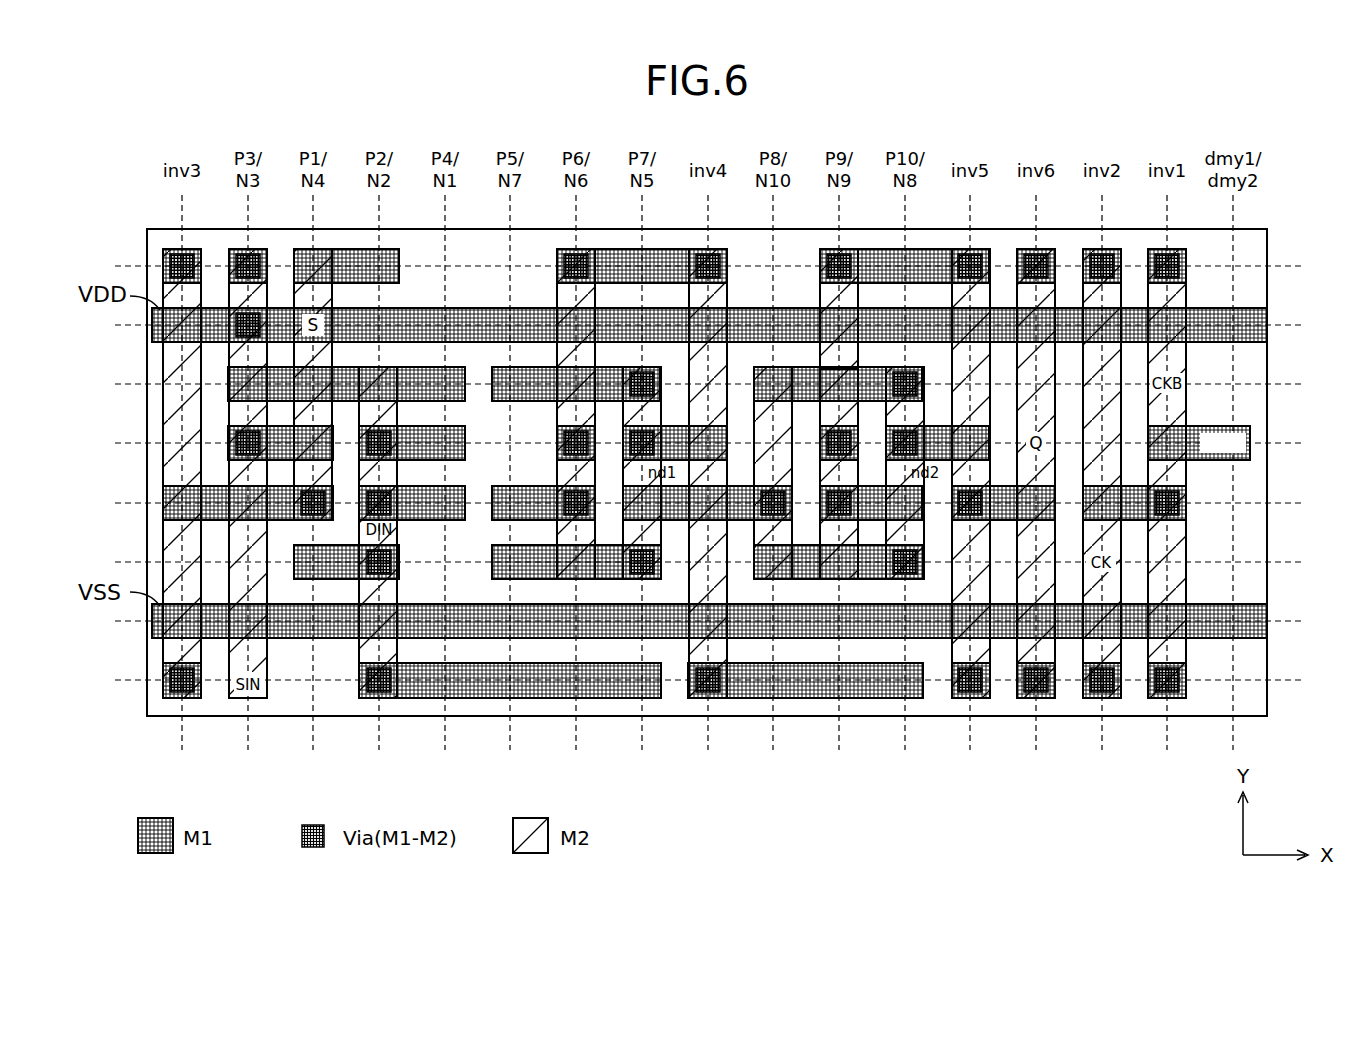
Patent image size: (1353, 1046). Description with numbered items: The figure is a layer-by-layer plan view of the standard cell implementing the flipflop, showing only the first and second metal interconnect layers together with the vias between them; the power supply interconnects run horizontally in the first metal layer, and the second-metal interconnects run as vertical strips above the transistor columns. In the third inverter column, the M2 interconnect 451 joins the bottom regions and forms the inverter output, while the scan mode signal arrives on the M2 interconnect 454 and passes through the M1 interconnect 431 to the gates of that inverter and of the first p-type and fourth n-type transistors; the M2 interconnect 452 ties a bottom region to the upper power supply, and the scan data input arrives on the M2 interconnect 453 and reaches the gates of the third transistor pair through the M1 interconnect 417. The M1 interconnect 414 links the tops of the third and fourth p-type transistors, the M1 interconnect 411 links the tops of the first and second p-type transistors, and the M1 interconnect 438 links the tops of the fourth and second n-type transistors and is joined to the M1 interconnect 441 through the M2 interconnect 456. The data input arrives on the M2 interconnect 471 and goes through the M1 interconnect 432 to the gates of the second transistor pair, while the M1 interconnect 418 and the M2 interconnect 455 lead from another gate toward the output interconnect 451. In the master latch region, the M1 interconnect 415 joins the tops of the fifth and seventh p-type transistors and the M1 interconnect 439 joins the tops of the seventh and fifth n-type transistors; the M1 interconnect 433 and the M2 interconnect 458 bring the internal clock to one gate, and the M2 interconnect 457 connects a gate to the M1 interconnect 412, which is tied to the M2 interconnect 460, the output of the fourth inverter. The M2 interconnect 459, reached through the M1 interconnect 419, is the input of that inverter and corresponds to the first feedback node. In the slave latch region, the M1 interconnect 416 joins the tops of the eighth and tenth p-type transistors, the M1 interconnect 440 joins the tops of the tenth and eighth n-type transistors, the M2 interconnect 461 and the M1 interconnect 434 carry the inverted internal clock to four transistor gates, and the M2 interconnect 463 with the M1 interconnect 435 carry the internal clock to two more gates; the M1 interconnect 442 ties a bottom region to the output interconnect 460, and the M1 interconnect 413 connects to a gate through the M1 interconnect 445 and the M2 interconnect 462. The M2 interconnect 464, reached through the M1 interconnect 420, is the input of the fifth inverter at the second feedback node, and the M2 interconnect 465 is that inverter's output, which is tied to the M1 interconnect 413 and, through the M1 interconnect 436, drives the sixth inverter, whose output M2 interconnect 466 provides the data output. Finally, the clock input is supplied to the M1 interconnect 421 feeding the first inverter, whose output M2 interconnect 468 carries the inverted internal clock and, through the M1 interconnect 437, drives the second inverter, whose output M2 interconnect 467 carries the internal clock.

The M1 interconnect 411 is at (358, 248).
The M1 interconnect 412 is at (665, 248).
The M1 interconnect 413 is at (925, 248).
The M1 interconnect 414 is at (270, 367).
The M1 interconnect 415 is at (520, 367).
The M1 interconnect 416 is at (814, 369).
The M1 interconnect 417 is at (270, 426).
The M1 interconnect 418 is at (440, 426).
The M1 interconnect 419 is at (650, 426).
The M1 interconnect 420 is at (918, 426).
The M1 interconnect 421 is at (1195, 428).
The M1 interconnect 431 is at (215, 520).
The M1 interconnect 432 is at (430, 520).
The M1 interconnect 433 is at (546, 486).
The M1 interconnect 434 is at (735, 520).
The M1 interconnect 435 is at (865, 530).
The M1 interconnect 436 is at (1003, 525).
The M1 interconnect 437 is at (1133, 525).
The M1 interconnect 438 is at (326, 547).
The M1 interconnect 439 is at (623, 518).
The M1 interconnect 440 is at (780, 533).
The M1 interconnect 441 is at (470, 700).
The M1 interconnect 442 is at (800, 700).
The M1 interconnect 445 is at (858, 450).
The M2 interconnect 451 is at (163, 408).
The M2 interconnect 452 is at (231, 255).
The M2 interconnect 453 is at (230, 660).
The M2 interconnect 454 is at (294, 258).
The M2 interconnect 455 is at (356, 428).
The M2 interconnect 456 is at (360, 660).
The M2 interconnect 457 is at (557, 297).
The M2 interconnect 458 is at (556, 562).
The M2 interconnect 459 is at (663, 560).
The M2 interconnect 460 is at (727, 297).
The M2 interconnect 461 is at (754, 420).
The M2 interconnect 462 is at (820, 297).
The M2 interconnect 463 is at (820, 490).
The M2 interconnect 464 is at (928, 537).
The M2 interconnect 465 is at (990, 252).
The M2 interconnect 466 is at (1056, 252).
The M2 interconnect 467 is at (1121, 252).
The M2 interconnect 468 is at (1186, 252).
The M2 interconnect 471 is at (382, 486).